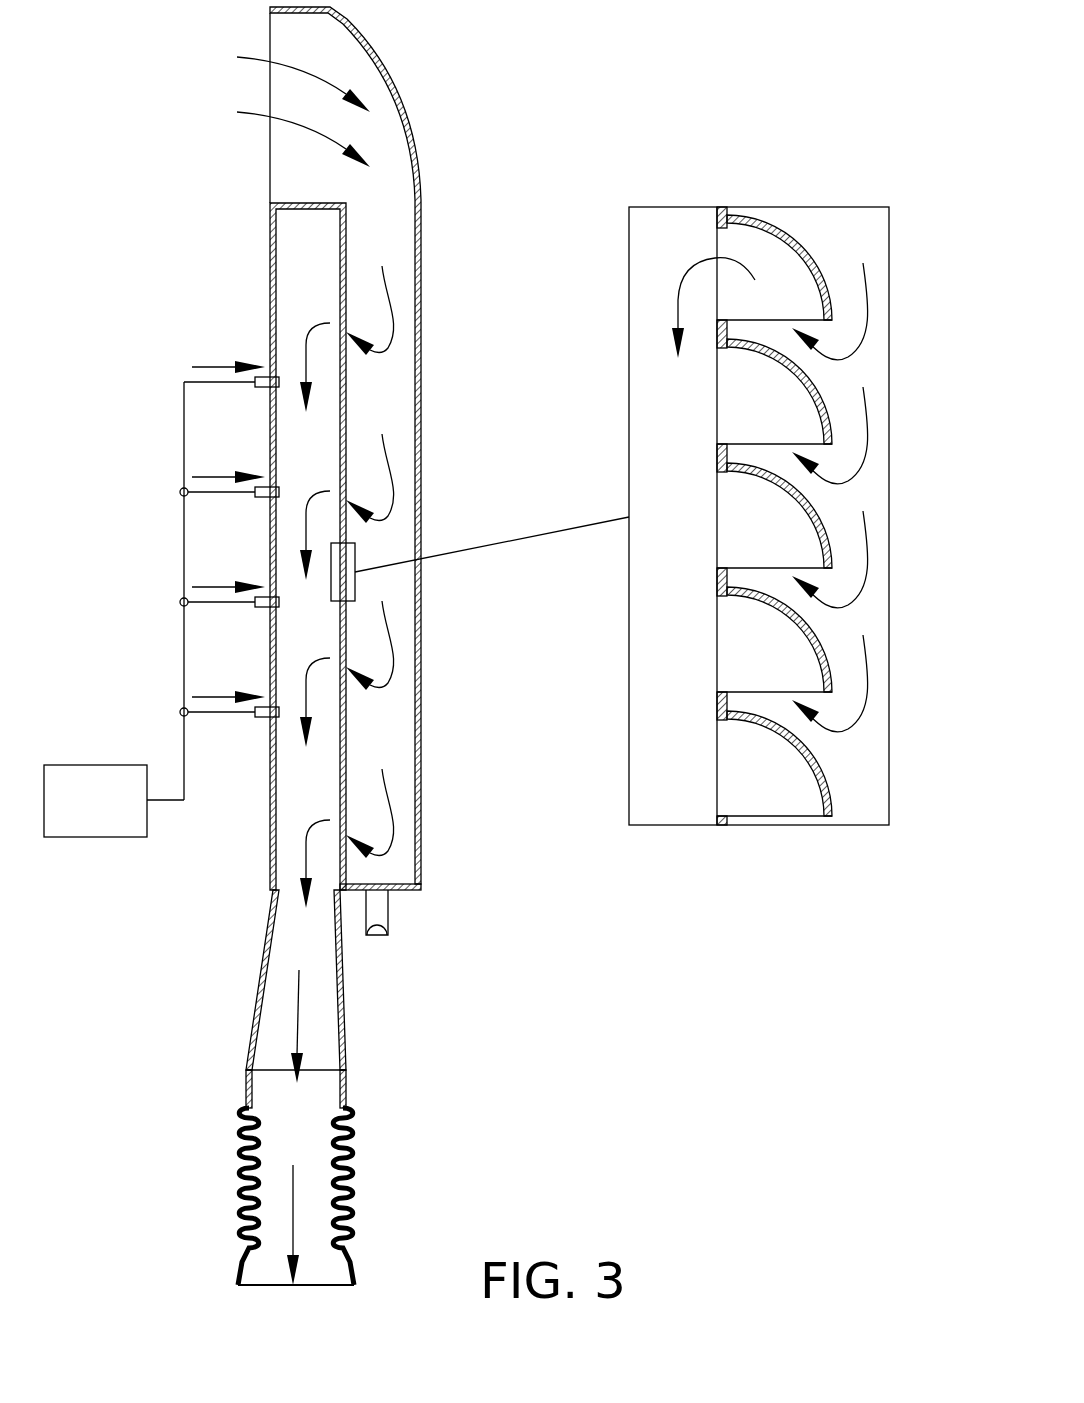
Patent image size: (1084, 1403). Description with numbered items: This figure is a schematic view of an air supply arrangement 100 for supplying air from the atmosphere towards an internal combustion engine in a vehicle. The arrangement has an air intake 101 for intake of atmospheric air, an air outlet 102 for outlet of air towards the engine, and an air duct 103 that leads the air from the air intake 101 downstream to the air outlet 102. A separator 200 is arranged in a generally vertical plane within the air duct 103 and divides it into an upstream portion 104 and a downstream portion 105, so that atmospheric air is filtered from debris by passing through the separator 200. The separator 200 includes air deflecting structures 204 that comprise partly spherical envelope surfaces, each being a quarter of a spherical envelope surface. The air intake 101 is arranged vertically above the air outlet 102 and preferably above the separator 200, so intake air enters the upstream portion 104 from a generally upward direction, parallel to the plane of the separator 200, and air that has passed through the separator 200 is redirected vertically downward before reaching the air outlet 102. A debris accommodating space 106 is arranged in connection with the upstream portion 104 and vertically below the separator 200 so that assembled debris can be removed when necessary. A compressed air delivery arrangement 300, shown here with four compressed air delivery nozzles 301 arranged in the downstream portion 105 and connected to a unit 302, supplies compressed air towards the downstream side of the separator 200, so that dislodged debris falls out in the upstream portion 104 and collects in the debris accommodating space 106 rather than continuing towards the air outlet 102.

The air supply arrangement 100 is at (526, 42).
The air intake 101 is at (205, 57).
The air outlet 102 is at (257, 980).
The air duct 103 is at (423, 222).
The upstream portion 104 is at (396, 277).
The downstream portion 105 is at (295, 843).
The debris accommodating space 106 is at (377, 908).
The separator 200 is at (346, 400).
The air deflecting structure 204 is at (817, 265).
The compressed air delivery arrangement 300 is at (146, 324).
The compressed air delivery nozzle 301 is at (262, 388).
The controller 302 is at (74, 816).